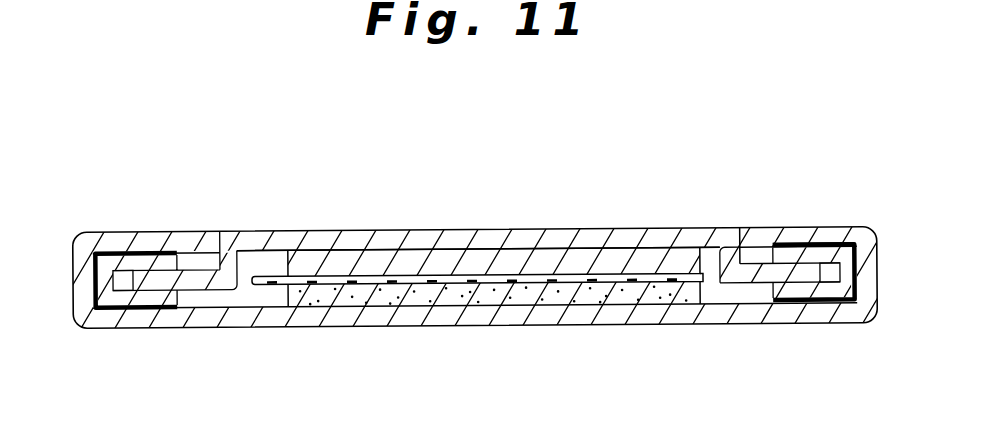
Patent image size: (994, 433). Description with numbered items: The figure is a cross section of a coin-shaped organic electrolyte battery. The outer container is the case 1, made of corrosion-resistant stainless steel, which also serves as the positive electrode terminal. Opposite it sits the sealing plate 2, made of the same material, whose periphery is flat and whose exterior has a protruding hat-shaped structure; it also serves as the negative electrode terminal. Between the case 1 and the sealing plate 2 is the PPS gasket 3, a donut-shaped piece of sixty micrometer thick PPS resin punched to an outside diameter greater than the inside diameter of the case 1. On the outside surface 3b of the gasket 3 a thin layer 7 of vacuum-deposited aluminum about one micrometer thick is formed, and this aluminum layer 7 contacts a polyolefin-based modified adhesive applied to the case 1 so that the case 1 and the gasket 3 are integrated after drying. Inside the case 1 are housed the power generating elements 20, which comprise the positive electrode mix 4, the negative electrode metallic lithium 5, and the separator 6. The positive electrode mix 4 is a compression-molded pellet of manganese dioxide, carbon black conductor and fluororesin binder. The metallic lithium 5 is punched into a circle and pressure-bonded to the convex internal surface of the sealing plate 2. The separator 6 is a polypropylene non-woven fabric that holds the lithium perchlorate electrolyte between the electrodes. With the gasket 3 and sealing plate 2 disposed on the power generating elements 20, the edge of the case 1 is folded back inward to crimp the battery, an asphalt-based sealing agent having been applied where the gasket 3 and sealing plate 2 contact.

The case 1 is at (688, 312).
The sealing plate 2 is at (702, 242).
The power generating elements 20 is at (411, 244).
The PPS gasket 3 is at (822, 292).
The outside surface 3b is at (809, 246).
The positive electrode mix 4 is at (531, 296).
The metallic lithium 5 is at (537, 262).
The separator 6 is at (258, 280).
The thin layer 7 is at (833, 262).